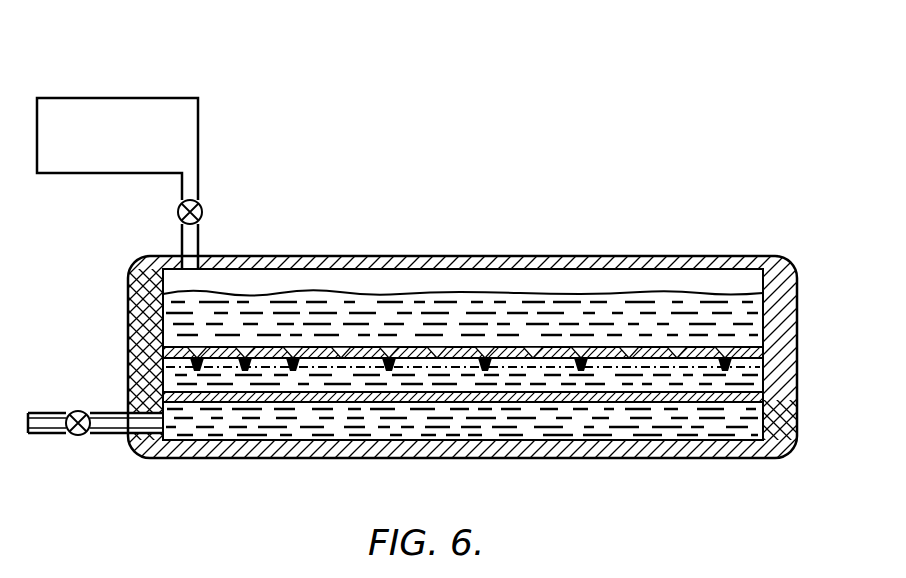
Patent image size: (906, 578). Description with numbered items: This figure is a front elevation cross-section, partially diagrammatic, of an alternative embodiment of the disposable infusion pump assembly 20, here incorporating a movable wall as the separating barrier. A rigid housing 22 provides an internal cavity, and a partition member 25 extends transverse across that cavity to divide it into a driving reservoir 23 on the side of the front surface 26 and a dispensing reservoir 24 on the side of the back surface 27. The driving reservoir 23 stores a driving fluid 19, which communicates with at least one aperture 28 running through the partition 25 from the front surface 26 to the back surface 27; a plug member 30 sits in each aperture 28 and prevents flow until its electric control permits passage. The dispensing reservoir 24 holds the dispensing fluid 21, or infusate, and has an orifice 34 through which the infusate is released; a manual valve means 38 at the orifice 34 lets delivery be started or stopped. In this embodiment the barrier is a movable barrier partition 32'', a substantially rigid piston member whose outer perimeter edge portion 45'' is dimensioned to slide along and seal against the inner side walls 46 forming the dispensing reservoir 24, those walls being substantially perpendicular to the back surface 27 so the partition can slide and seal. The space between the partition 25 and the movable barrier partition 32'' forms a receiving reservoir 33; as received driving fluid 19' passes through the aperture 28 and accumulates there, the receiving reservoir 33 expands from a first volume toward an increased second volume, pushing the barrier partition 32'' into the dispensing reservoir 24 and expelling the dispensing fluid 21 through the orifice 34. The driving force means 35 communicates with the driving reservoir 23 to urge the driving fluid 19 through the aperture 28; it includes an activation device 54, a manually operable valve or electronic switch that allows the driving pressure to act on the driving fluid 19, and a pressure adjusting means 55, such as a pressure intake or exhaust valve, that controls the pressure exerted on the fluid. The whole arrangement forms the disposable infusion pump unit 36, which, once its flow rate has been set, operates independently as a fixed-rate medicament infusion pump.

The disposable infusion pump assembly 20 is at (592, 62).
The driving force means 35 is at (158, 98).
The activation device 54 is at (203, 213).
The pressure adjusting means 55 is at (178, 213).
The disposable infusion pump unit 36 is at (449, 342).
The housing 22 is at (798, 292).
The front surface 26 is at (168, 312).
The outer perimeter edge portion 45'' is at (113, 354).
The inner side walls 46 is at (163, 393).
The valve means 38 is at (78, 436).
The orifice 34 is at (118, 436).
The receiving reservoir 33 is at (350, 383).
The dispensing reservoir 24 is at (462, 453).
The plug member 30 is at (578, 365).
The dispensing fluid 21 is at (590, 430).
The received driving fluid 19' is at (687, 452).
The movable barrier partition 32'' is at (798, 436).
The back surface 27 is at (753, 373).
The driving fluid 19 is at (462, 279).
The driving reservoir 23 is at (463, 279).
The aperture 28 is at (488, 358).
The partition member 25 is at (463, 361).